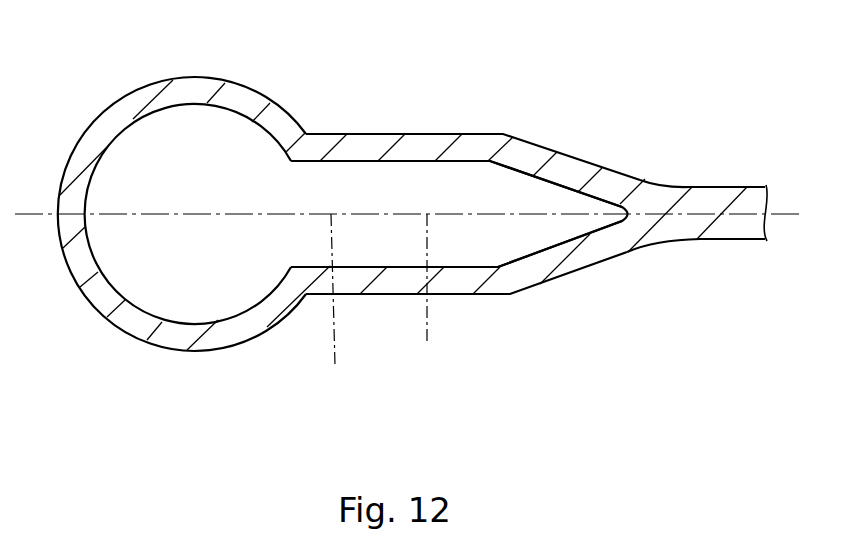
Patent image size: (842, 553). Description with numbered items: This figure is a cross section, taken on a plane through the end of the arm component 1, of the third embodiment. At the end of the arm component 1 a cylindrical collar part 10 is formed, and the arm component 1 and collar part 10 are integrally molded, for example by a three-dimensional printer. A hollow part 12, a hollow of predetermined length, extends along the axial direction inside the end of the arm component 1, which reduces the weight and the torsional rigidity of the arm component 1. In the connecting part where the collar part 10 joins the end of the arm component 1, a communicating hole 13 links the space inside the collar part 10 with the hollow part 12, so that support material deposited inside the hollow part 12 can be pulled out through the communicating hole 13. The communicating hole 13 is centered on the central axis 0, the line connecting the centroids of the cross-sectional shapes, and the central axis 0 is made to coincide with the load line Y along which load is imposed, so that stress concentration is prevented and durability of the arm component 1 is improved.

The arm component 1 is at (637, 180).
The collar part 10 is at (136, 90).
The hollow part 12 is at (445, 197).
The communicating hole 13 is at (300, 192).
The central axis 0 is at (339, 304).
The load line Y is at (432, 294).